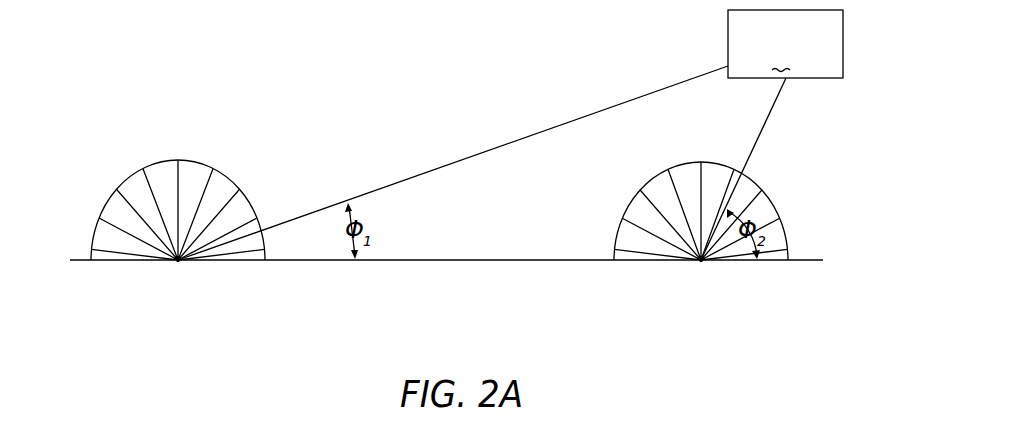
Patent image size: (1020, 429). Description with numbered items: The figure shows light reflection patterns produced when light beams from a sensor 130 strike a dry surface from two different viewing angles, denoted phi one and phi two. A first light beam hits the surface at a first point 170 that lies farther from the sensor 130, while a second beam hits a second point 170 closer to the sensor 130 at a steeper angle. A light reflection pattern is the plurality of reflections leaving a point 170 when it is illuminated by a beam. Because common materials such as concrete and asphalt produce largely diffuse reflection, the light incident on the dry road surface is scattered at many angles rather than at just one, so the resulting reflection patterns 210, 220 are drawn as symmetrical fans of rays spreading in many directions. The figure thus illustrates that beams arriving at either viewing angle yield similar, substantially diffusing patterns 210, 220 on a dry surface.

The sensor 130 is at (510, 135).
The point 170 is at (176, 264).
The reflection pattern 210 is at (93, 180).
The reflection pattern 220 is at (603, 205).